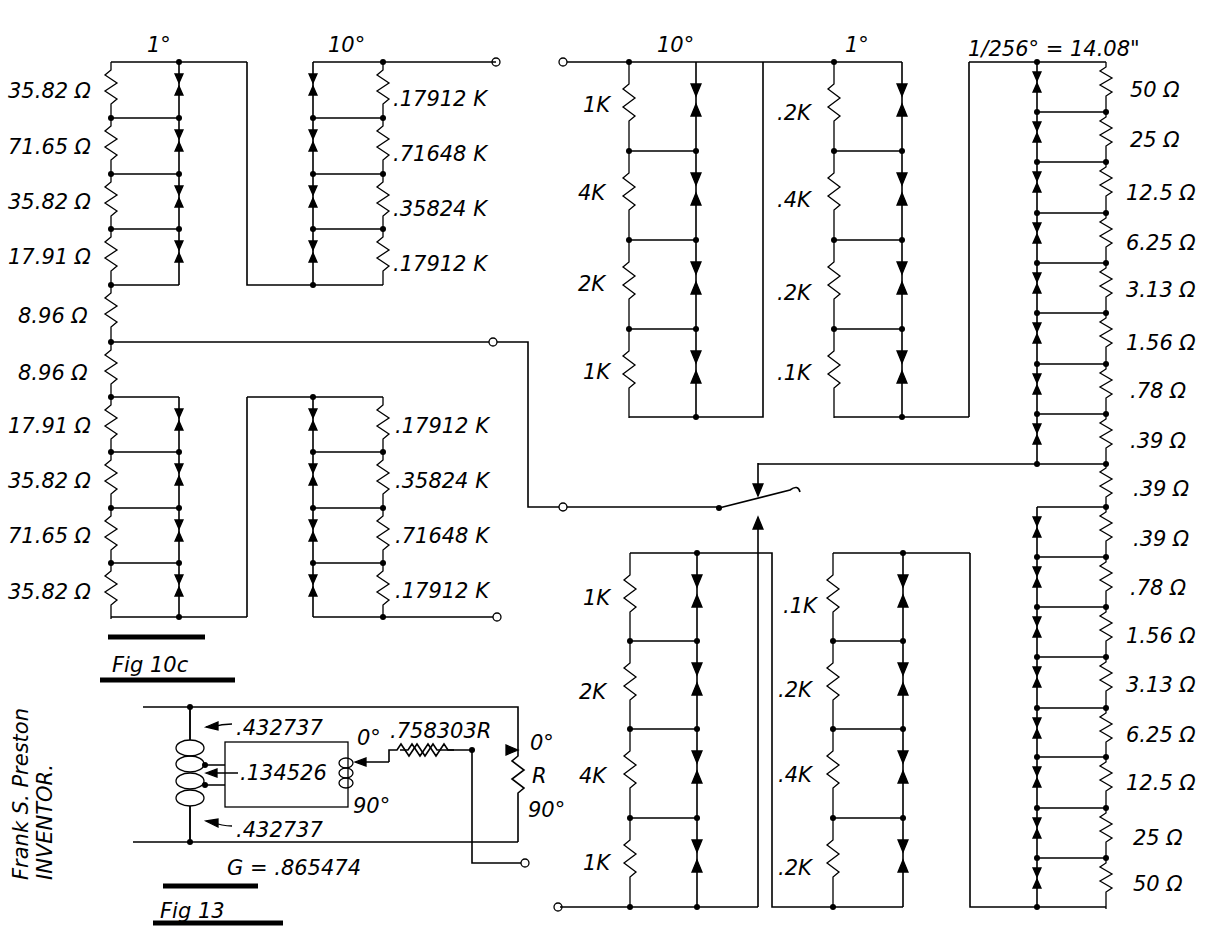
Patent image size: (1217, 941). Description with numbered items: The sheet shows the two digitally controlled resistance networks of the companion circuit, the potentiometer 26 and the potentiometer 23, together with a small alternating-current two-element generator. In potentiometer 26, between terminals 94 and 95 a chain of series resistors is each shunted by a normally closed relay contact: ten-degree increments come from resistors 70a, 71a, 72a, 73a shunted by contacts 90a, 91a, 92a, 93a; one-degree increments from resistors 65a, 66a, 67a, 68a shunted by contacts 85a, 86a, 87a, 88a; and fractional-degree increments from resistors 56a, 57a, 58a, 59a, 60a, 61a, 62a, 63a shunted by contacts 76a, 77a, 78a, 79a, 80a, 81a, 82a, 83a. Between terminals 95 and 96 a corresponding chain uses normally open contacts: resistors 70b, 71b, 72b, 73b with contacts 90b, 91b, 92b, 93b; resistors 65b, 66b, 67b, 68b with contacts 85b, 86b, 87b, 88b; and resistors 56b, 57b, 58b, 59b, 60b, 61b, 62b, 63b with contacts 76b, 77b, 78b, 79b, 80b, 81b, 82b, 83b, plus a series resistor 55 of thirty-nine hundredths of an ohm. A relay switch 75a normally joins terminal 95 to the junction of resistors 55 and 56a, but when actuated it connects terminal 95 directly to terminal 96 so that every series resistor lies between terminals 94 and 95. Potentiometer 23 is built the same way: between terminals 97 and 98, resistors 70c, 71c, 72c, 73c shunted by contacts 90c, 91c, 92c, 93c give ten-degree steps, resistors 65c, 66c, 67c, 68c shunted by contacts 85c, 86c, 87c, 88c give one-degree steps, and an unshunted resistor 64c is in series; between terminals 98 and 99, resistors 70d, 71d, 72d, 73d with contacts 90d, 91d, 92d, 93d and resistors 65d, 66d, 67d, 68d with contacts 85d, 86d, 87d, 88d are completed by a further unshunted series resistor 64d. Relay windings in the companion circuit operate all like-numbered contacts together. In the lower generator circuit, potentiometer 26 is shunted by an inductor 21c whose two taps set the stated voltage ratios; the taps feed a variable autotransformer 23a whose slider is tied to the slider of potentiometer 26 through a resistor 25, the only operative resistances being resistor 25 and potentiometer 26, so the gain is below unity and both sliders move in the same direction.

In FIG. 13, the inductor 21c is at (160, 795).
In FIG. 10c, the digitally controlled potentiometer 23 is at (402, 317).
In FIG. 13, the variable autotransformer 23a is at (357, 776).
In FIG. 13, the resistor 25 is at (445, 753).
In FIG. 10c, the digitally controlled potentiometer 26 is at (711, 449).
In FIG. 13, the digitally controlled potentiometer 26 is at (514, 789).
In FIG. 10c, the series-connected resistor 55 is at (1094, 483).
In FIG. 10c, the resistor 56a is at (1094, 441).
In FIG. 10c, the resistor 57a is at (1094, 391).
In FIG. 10c, the resistor 58a is at (1094, 341).
In FIG. 10c, the resistor 59a is at (1094, 291).
In FIG. 10c, the resistor 60a is at (1094, 241).
In FIG. 10c, the resistor 61a is at (1094, 190).
In FIG. 10c, the resistor 62a is at (1094, 138).
In FIG. 10c, the resistor 63a is at (1094, 88).
In FIG. 10c, the resistor 56b is at (1094, 533).
In FIG. 10c, the resistor 57b is at (1094, 583).
In FIG. 10c, the resistor 58b is at (1094, 633).
In FIG. 10c, the resistor 59b is at (1094, 683).
In FIG. 10c, the resistor 60b is at (1094, 733).
In FIG. 10c, the resistor 61b is at (1094, 783).
In FIG. 10c, the resistor 62b is at (1094, 833).
In FIG. 10c, the resistor 63b is at (1094, 883).
In FIG. 10c, the resistor 64c is at (123, 314).
In FIG. 10c, the resistor 64d is at (117, 368).
In FIG. 10c, the resistor 65a is at (864, 386).
In FIG. 10c, the resistor 66a is at (864, 296).
In FIG. 10c, the resistor 67a is at (864, 210).
In FIG. 10c, the resistor 68a is at (864, 119).
In FIG. 10c, the resistor 65b is at (864, 610).
In FIG. 10c, the resistor 66b is at (864, 696).
In FIG. 10c, the resistor 67b is at (864, 784).
In FIG. 10c, the resistor 68b is at (864, 873).
In FIG. 10c, the resistor 65c is at (113, 264).
In FIG. 10c, the resistor 66c is at (113, 209).
In FIG. 10c, the resistor 67c is at (113, 153).
In FIG. 10c, the resistor 68c is at (113, 98).
In FIG. 10c, the resistor 65d is at (111, 431).
In FIG. 10c, the resistor 66d is at (110, 487).
In FIG. 10c, the resistor 67d is at (110, 541).
In FIG. 10c, the resistor 68d is at (110, 595).
In FIG. 10c, the resistor 70a is at (660, 384).
In FIG. 10c, the resistor 71a is at (660, 295).
In FIG. 10c, the resistor 72a is at (660, 207).
In FIG. 10c, the resistor 73a is at (660, 118).
In FIG. 10c, the resistor 70b is at (661, 608).
In FIG. 10c, the resistor 71b is at (661, 696).
In FIG. 10c, the resistor 72b is at (661, 784).
In FIG. 10c, the resistor 73b is at (661, 873).
In FIG. 10c, the resistor 70c is at (377, 258).
In FIG. 10c, the resistor 71c is at (377, 203).
In FIG. 10c, the resistor 72c is at (377, 148).
In FIG. 10c, the resistor 73c is at (377, 93).
In FIG. 10c, the resistor 70d is at (377, 427).
In FIG. 10c, the resistor 71d is at (377, 482).
In FIG. 10c, the resistor 72d is at (377, 539).
In FIG. 10c, the resistor 73d is at (377, 595).
In FIG. 10c, the relay switch 75a is at (791, 498).
In FIG. 10c, the relay contact 76a is at (1030, 439).
In FIG. 10c, the relay contact 77a is at (1030, 394).
In FIG. 10c, the relay contact 78a is at (1030, 344).
In FIG. 10c, the relay contact 79a is at (1030, 294).
In FIG. 10c, the relay contact 80a is at (1030, 244).
In FIG. 10c, the relay contact 81a is at (1030, 194).
In FIG. 10c, the relay contact 82a is at (1032, 134).
In FIG. 10c, the relay contact 83a is at (1032, 86).
In FIG. 10c, the relay contact 76b is at (1030, 540).
In FIG. 10c, the relay contact 77b is at (1030, 590).
In FIG. 10c, the relay contact 78b is at (1030, 640).
In FIG. 10c, the relay contact 79b is at (1030, 690).
In FIG. 10c, the relay contact 80b is at (1030, 740).
In FIG. 10c, the relay contact 81b is at (1028, 786).
In FIG. 10c, the relay contact 82b is at (1030, 840).
In FIG. 10c, the relay contact 83b is at (1030, 890).
In FIG. 10c, the relay contact 85a is at (906, 378).
In FIG. 10c, the relay contact 86a is at (906, 292).
In FIG. 10c, the relay contact 87a is at (906, 200).
In FIG. 10c, the relay contact 88a is at (906, 110).
In FIG. 10c, the relay contact 85b is at (906, 604).
In FIG. 10c, the relay contact 86b is at (906, 692).
In FIG. 10c, the relay contact 87b is at (906, 780).
In FIG. 10c, the relay contact 88b is at (906, 868).
In FIG. 10c, the relay contact 85c is at (182, 253).
In FIG. 10c, the relay contact 86c is at (182, 198).
In FIG. 10c, the relay contact 87c is at (182, 142).
In FIG. 10c, the relay contact 88c is at (182, 87).
In FIG. 10c, the relay contact 85d is at (182, 415).
In FIG. 10c, the relay contact 86d is at (182, 472).
In FIG. 10c, the relay contact 87d is at (182, 529).
In FIG. 10c, the relay contact 88d is at (182, 593).
In FIG. 10c, the relay contact 90a is at (700, 370).
In FIG. 10c, the relay contact 91a is at (700, 292).
In FIG. 10c, the relay contact 92a is at (700, 204).
In FIG. 10c, the relay contact 93a is at (700, 108).
In FIG. 10c, the relay contact 90b is at (700, 592).
In FIG. 10c, the relay contact 91b is at (700, 694).
In FIG. 10c, the relay contact 92b is at (700, 770).
In FIG. 10c, the relay contact 93b is at (700, 858).
In FIG. 10c, the relay contact 90c is at (310, 260).
In FIG. 10c, the relay contact 91c is at (310, 208).
In FIG. 10c, the relay contact 92c is at (310, 152).
In FIG. 10c, the relay contact 93c is at (310, 94).
In FIG. 10c, the relay contact 90d is at (310, 432).
In FIG. 10c, the relay contact 91d is at (310, 485).
In FIG. 10c, the relay contact 92d is at (310, 534).
In FIG. 10c, the relay contact 93d is at (310, 595).
In FIG. 10c, the terminal 94 is at (580, 40).
In FIG. 10c, the terminal 95 is at (562, 513).
In FIG. 10c, the terminal 96 is at (553, 906).
In FIG. 10c, the terminal 97 is at (503, 45).
In FIG. 10c, the terminal 98 is at (492, 348).
In FIG. 10c, the terminal 99 is at (496, 623).